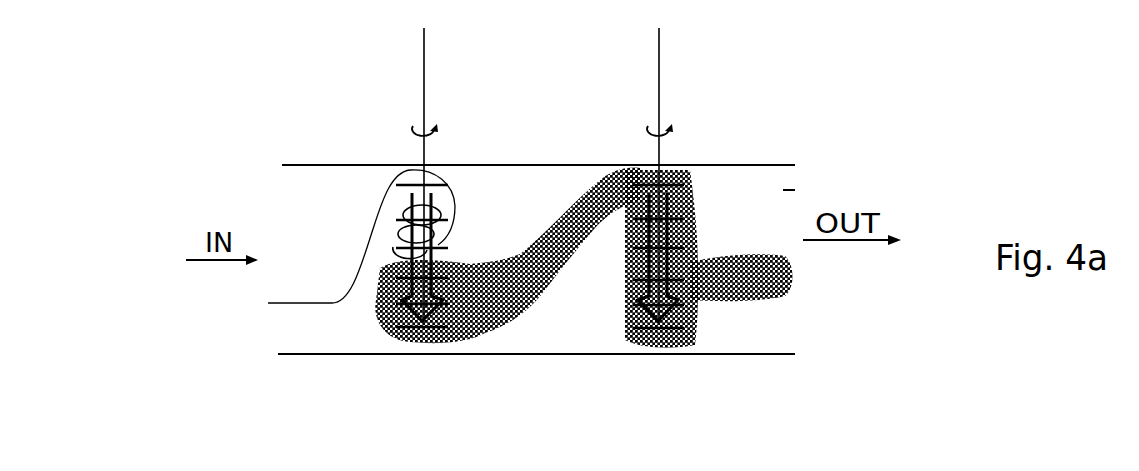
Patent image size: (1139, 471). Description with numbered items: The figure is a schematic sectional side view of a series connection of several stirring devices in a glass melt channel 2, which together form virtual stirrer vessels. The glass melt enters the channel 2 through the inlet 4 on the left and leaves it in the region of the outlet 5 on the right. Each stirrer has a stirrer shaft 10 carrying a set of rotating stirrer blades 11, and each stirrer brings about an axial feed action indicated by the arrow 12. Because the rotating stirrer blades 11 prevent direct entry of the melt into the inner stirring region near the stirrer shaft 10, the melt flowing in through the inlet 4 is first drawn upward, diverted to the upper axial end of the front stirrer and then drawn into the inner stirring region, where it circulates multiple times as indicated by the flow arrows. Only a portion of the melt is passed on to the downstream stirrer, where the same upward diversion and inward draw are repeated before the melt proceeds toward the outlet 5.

The channel 2 is at (533, 345).
The inlet 4 is at (300, 187).
The outlet 5 is at (783, 190).
The stirrer shaft 10 is at (424, 88).
The stirrer blades 11 is at (442, 246).
The arrow 12 is at (441, 197).